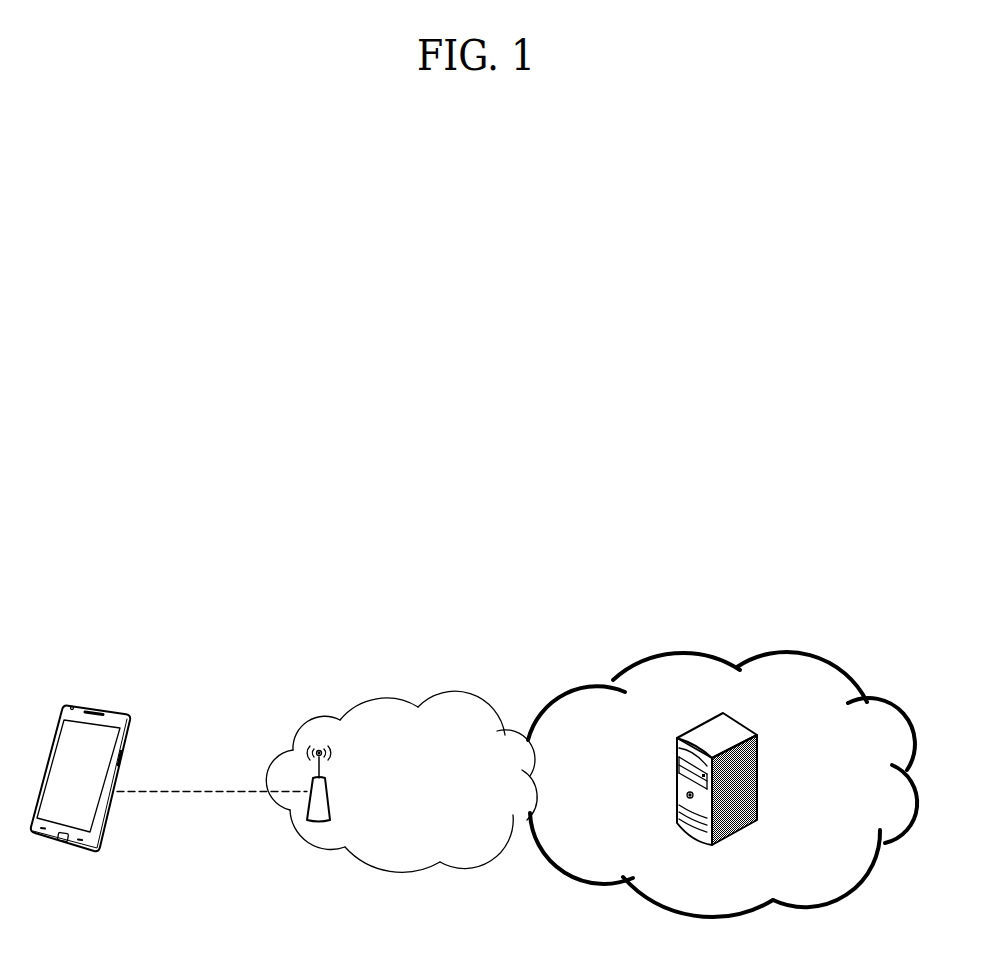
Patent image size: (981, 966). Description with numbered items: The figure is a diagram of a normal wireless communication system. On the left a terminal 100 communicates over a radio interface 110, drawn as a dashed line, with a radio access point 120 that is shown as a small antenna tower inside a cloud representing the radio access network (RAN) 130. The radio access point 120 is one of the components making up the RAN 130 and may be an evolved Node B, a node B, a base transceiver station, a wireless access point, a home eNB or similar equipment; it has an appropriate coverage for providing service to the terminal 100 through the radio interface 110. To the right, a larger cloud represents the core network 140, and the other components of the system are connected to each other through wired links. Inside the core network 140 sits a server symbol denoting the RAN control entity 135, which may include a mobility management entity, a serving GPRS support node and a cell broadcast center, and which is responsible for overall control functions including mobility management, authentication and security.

The terminal 100 is at (107, 705).
The radio interface 110 is at (183, 790).
The radio access point 120 is at (331, 797).
The radio access network 130 is at (382, 695).
The RAN control entity 135 is at (758, 773).
The core network 140 is at (820, 653).